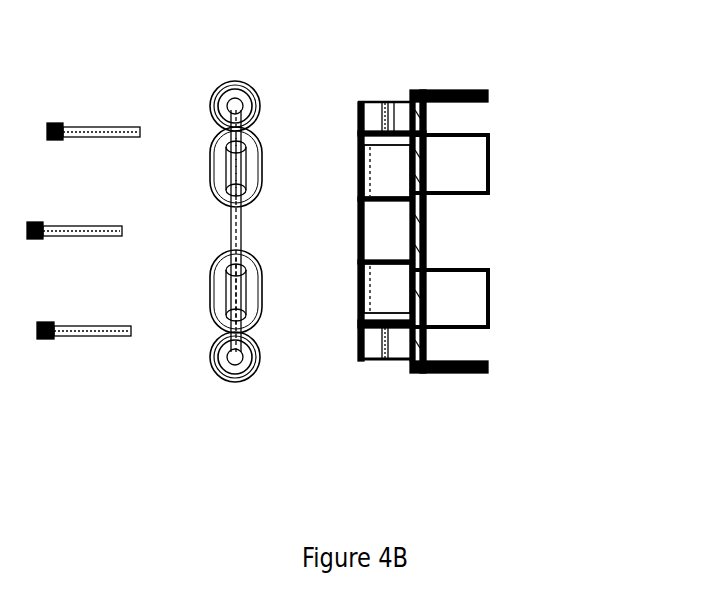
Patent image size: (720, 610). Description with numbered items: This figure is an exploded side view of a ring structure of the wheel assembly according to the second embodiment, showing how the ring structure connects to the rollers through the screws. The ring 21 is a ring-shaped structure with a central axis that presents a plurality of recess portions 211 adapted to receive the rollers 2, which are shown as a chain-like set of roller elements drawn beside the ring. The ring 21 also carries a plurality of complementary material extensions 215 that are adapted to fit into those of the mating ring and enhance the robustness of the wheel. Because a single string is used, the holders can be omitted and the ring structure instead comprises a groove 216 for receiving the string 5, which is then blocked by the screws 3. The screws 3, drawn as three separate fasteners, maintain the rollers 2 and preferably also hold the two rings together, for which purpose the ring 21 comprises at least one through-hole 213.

The roller 2 is at (212, 214).
The screw 3 is at (81, 205).
The string 5 is at (277, 231).
The ring 21 is at (486, 231).
The recess portion 211 is at (467, 229).
The through-hole 213 is at (327, 71).
The complementary material extension 215 is at (514, 149).
The groove 216 is at (439, 392).